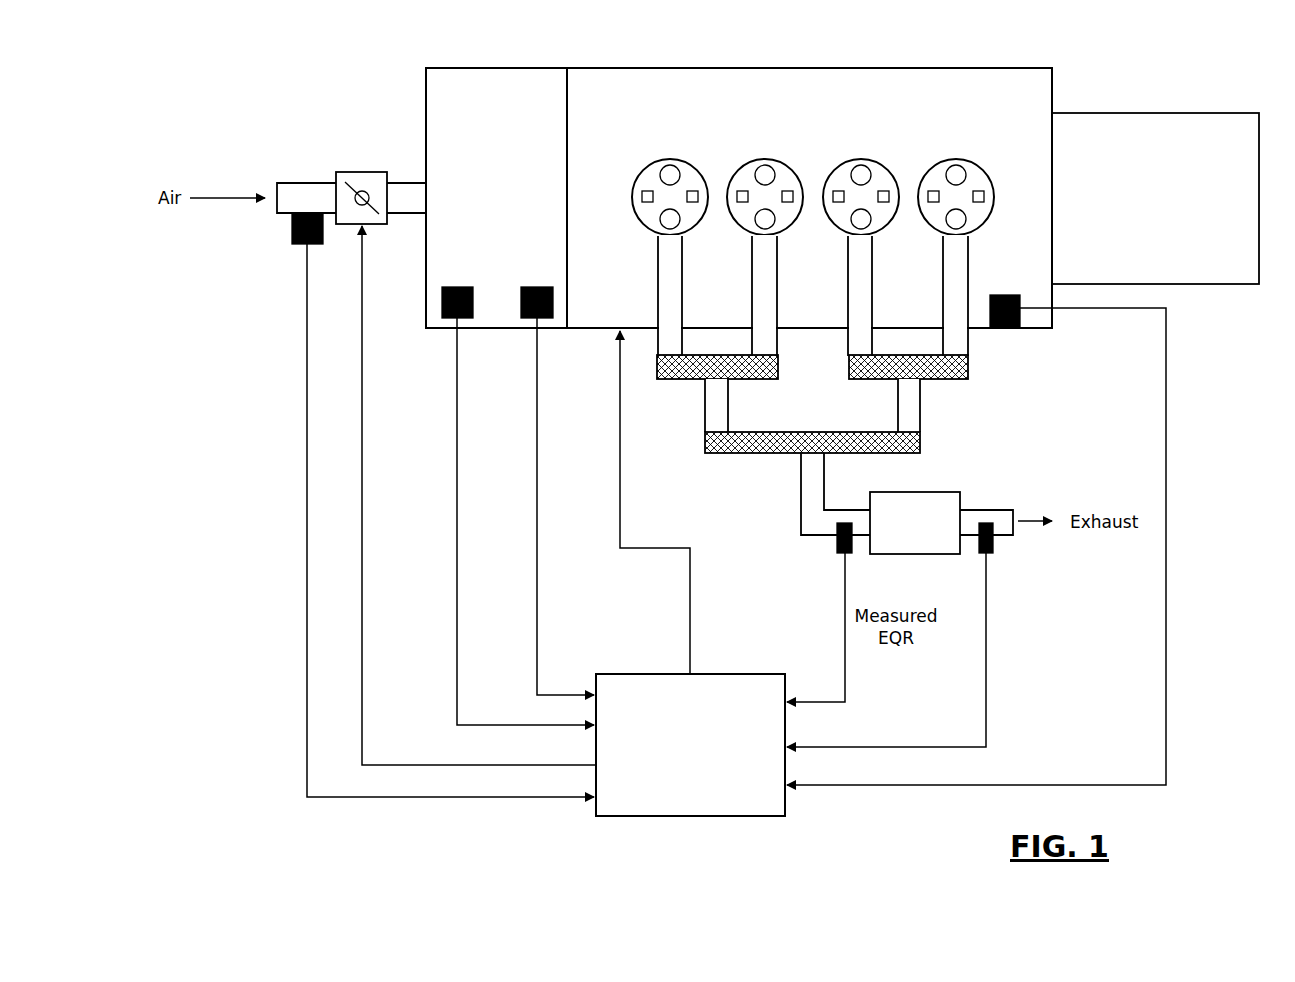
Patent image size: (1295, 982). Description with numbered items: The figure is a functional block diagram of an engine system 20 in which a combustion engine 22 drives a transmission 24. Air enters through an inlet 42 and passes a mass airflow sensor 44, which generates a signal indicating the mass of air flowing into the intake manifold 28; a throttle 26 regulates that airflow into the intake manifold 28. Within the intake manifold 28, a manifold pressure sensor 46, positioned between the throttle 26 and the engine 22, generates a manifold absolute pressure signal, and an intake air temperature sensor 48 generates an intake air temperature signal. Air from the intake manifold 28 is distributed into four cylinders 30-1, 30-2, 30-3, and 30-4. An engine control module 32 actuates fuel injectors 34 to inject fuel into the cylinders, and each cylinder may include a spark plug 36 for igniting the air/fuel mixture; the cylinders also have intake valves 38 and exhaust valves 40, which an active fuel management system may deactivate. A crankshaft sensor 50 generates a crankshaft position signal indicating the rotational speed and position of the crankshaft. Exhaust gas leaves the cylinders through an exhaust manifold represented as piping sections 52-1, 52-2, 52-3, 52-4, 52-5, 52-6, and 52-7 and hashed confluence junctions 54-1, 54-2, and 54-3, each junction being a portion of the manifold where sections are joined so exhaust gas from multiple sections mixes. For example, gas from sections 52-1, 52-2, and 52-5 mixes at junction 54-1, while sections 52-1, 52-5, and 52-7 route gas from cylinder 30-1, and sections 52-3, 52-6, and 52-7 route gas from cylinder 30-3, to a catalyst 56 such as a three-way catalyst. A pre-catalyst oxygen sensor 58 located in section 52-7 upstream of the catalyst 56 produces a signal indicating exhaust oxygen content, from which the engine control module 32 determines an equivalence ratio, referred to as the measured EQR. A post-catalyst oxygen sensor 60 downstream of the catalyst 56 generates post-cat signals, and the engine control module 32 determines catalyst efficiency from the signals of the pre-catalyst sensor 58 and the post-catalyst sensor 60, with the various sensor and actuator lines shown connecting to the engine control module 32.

The engine system 20 is at (273, 47).
The combustion engine 22 is at (808, 68).
The transmission 24 is at (1155, 113).
The throttle 26 is at (362, 172).
The intake manifold 28 is at (494, 68).
The cylinder 30-1 is at (667, 159).
The cylinder 30-2 is at (762, 159).
The cylinder 30-3 is at (858, 159).
The cylinder 30-4 is at (953, 159).
The engine control module 32 is at (682, 816).
The fuel injector 34 is at (644, 203).
The spark plug 36 is at (695, 203).
The intake valve 38 is at (966, 173).
The exhaust valve 40 is at (963, 221).
The inlet 42 is at (308, 183).
The mass airflow sensor 44 is at (292, 238).
The manifold pressure sensor 46 is at (455, 287).
The intake air temperature sensor 48 is at (529, 287).
The crankshaft sensor 50 is at (1018, 327).
The exhaust manifold section 52-1 is at (658, 290).
The exhaust manifold section 52-2 is at (752, 290).
The exhaust manifold section 52-3 is at (848, 290).
The exhaust manifold section 52-4 is at (943, 290).
The exhaust manifold section 52-5 is at (705, 410).
The exhaust manifold section 52-6 is at (920, 410).
The exhaust manifold section 52-7 is at (800, 496).
The confluence junction 54-1 is at (779, 372).
The confluence junction 54-2 is at (969, 372).
The confluence junction 54-3 is at (753, 453).
The catalyst 56 is at (914, 555).
The pre-catalyst oxygen sensor 58 is at (838, 549).
The post-catalyst oxygen sensor 60 is at (993, 549).